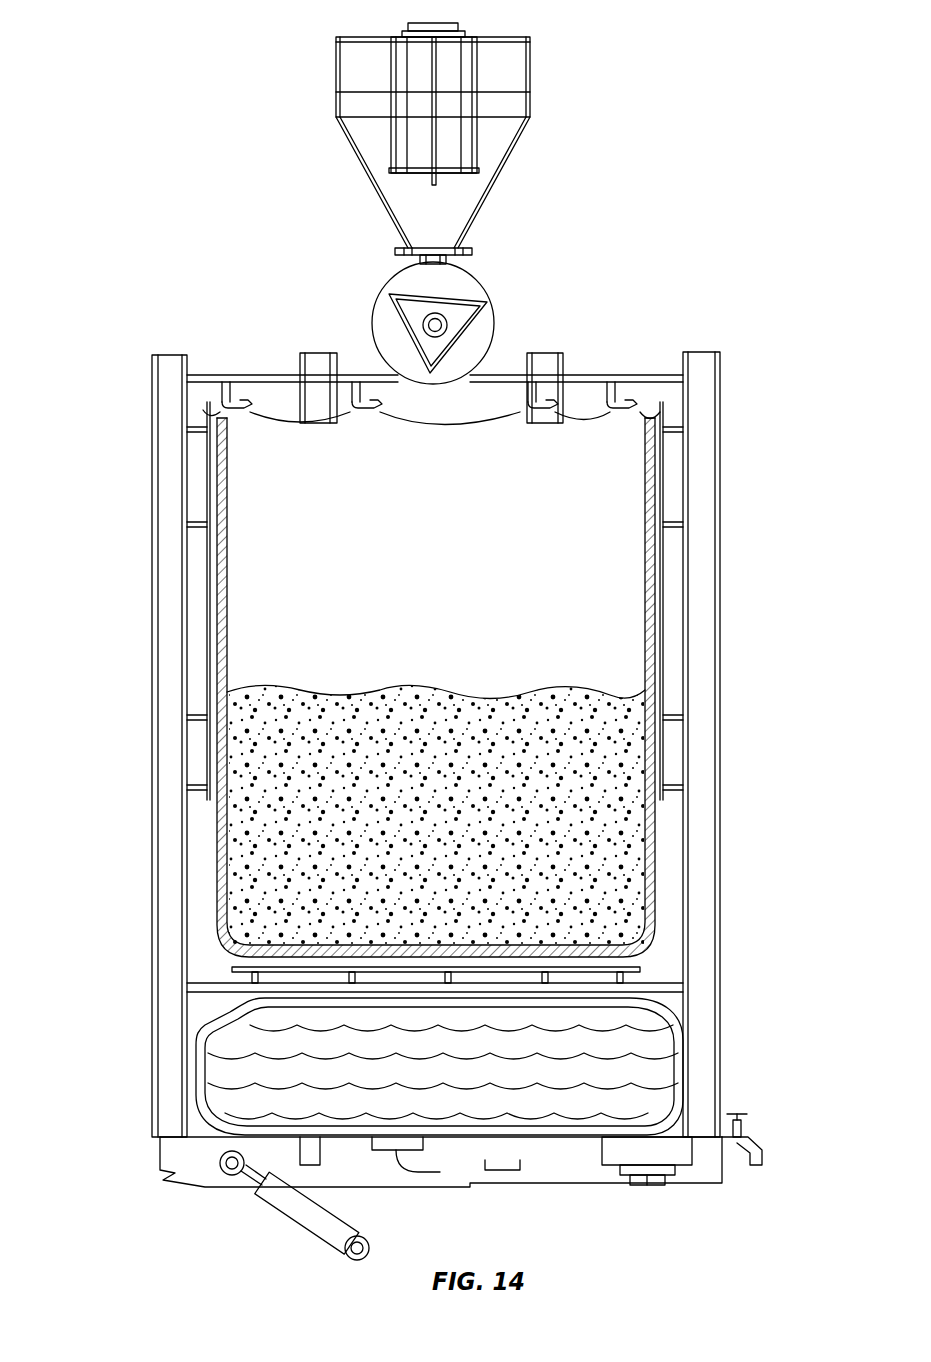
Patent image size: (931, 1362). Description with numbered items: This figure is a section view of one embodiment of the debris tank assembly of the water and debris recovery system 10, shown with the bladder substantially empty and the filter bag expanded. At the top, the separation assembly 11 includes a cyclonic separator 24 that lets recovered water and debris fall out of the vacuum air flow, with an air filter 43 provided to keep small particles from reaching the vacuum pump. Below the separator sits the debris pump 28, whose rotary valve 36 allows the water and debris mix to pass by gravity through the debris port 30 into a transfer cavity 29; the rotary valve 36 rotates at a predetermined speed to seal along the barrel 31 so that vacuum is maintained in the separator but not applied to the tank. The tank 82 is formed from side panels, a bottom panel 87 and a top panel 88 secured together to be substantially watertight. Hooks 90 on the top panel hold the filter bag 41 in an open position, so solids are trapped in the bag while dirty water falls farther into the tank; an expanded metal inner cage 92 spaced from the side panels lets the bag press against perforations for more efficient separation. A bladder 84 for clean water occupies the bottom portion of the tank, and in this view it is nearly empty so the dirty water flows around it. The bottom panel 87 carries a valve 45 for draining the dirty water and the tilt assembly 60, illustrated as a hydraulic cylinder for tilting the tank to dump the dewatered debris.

The water and debris recovery system 10 is at (160, 250).
The cyclonic separator 24 is at (530, 75).
The air filter 43 is at (390, 105).
The separation assembly 11 is at (355, 155).
The debris port 30 is at (455, 248).
The barrel 31 is at (390, 283).
The debris pump 28 is at (485, 285).
The rotary valve 36 is at (470, 307).
The transfer cavity 29 is at (400, 333).
The bladder 84 is at (152, 440).
The top panel 88 is at (597, 370).
The hooks 90 is at (232, 380).
The tank 82 is at (152, 545).
The expanded metal inner cage 92 is at (660, 510).
The filter bag 41 is at (610, 695).
The bottom panel 87 is at (590, 1137).
The valve 45 is at (747, 1120).
The tilt assembly 60 is at (300, 1220).